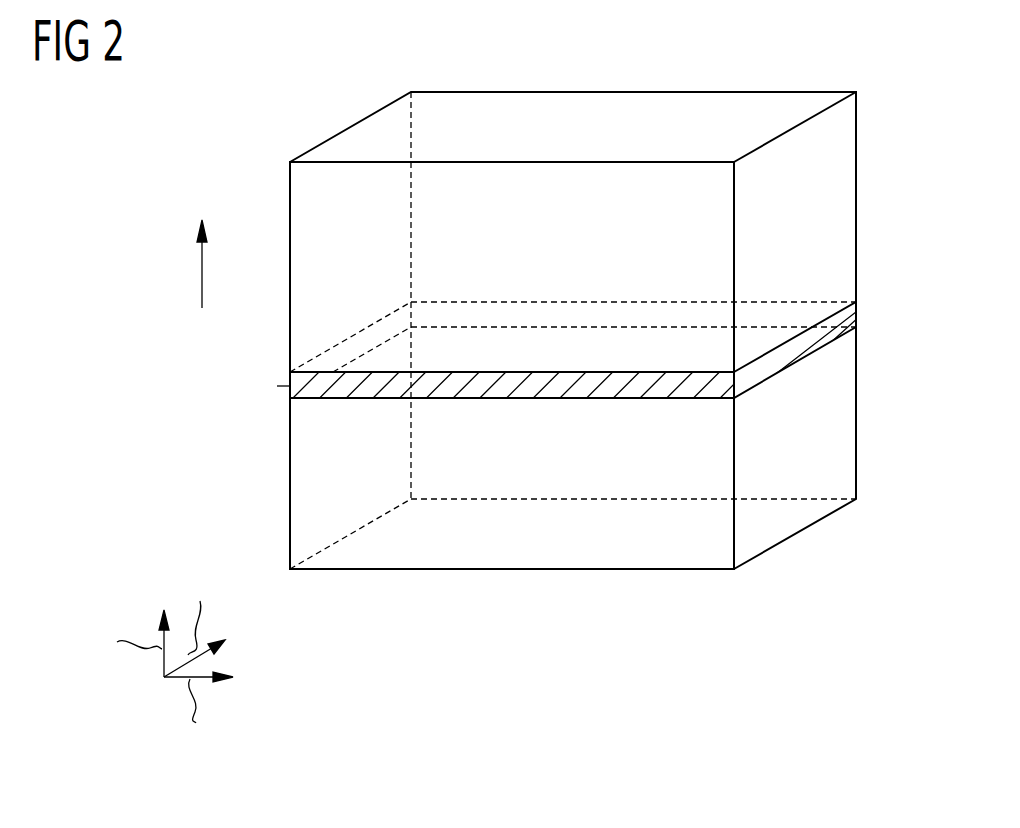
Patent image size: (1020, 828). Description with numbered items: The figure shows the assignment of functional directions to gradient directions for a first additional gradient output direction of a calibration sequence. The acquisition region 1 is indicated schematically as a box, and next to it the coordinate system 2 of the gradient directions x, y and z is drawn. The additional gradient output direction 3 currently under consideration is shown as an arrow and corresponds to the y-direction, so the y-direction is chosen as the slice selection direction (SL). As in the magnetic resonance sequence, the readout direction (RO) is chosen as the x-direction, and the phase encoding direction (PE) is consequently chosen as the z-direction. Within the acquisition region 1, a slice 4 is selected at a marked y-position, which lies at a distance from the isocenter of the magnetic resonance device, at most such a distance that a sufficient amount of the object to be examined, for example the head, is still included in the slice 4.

The acquisition region 1 is at (858, 194).
The coordinate system 2 is at (122, 706).
The additional gradient output direction 3 is at (202, 270).
The slice 4 is at (858, 322).